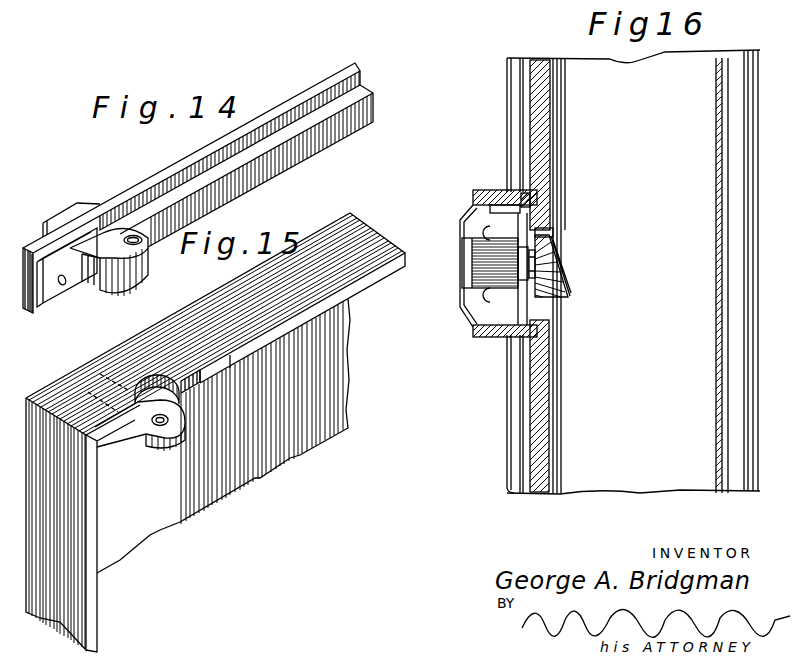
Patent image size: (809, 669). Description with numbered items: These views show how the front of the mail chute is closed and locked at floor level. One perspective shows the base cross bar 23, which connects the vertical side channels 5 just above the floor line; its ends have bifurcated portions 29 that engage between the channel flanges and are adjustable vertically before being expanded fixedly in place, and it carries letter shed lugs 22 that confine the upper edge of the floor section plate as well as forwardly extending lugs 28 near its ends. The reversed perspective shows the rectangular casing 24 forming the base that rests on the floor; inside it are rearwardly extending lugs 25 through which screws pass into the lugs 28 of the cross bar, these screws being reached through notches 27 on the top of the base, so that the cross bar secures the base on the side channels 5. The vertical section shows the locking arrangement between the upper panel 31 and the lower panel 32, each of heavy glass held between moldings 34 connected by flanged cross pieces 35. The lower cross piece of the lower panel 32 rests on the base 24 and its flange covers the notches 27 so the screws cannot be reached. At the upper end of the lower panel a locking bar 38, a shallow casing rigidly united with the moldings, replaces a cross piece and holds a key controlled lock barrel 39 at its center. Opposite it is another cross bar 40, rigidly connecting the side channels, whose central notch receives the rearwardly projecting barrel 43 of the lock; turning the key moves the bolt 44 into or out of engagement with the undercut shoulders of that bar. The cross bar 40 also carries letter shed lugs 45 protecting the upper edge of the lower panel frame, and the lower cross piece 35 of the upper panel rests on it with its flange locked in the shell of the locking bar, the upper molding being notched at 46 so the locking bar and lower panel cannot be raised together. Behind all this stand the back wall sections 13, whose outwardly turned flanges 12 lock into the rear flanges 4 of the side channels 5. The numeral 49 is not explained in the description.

In FIG. 14, the element (cut off at sheet top) 49 is at (232, 0).
In FIG. 14, the letter shed lugs 22 is at (68, 218).
In FIG. 14, the cross bar 23 is at (276, 108).
In FIG. 14, the forwardly extending lugs 28 is at (132, 285).
In FIG. 14, the bifurcated portions 29 is at (68, 290).
In FIG. 15, the rectangular casing 24 is at (358, 228).
In FIG. 15, the rearwardly extending lugs 25 is at (158, 445).
In FIG. 15, the notches 27 is at (150, 375).
In FIG. 16, the moldings 34 is at (510, 134).
In FIG. 16, the upper panel 31 is at (548, 115).
In FIG. 16, the lower panel 32 is at (546, 381).
In FIG. 16, the flanged cross pieces 35 is at (500, 190).
In FIG. 16, the notch 46 is at (520, 194).
In FIG. 16, the barrel 43 is at (532, 253).
In FIG. 16, the bolt 44 is at (546, 264).
In FIG. 16, the letter shed lugs 45 is at (563, 286).
In FIG. 16, the cross bar 40 is at (548, 297).
In FIG. 16, the lock barrel 39 is at (485, 257).
In FIG. 16, the locking bar 38 is at (466, 312).
In FIG. 16, the back wall sections 13 is at (716, 353).
In FIG. 16, the outwardly turned spaced flanges 12 is at (736, 390).
In FIG. 16, the rear flanges 4 is at (752, 446).
In FIG. 16, the vertical side channels 5 is at (618, 480).